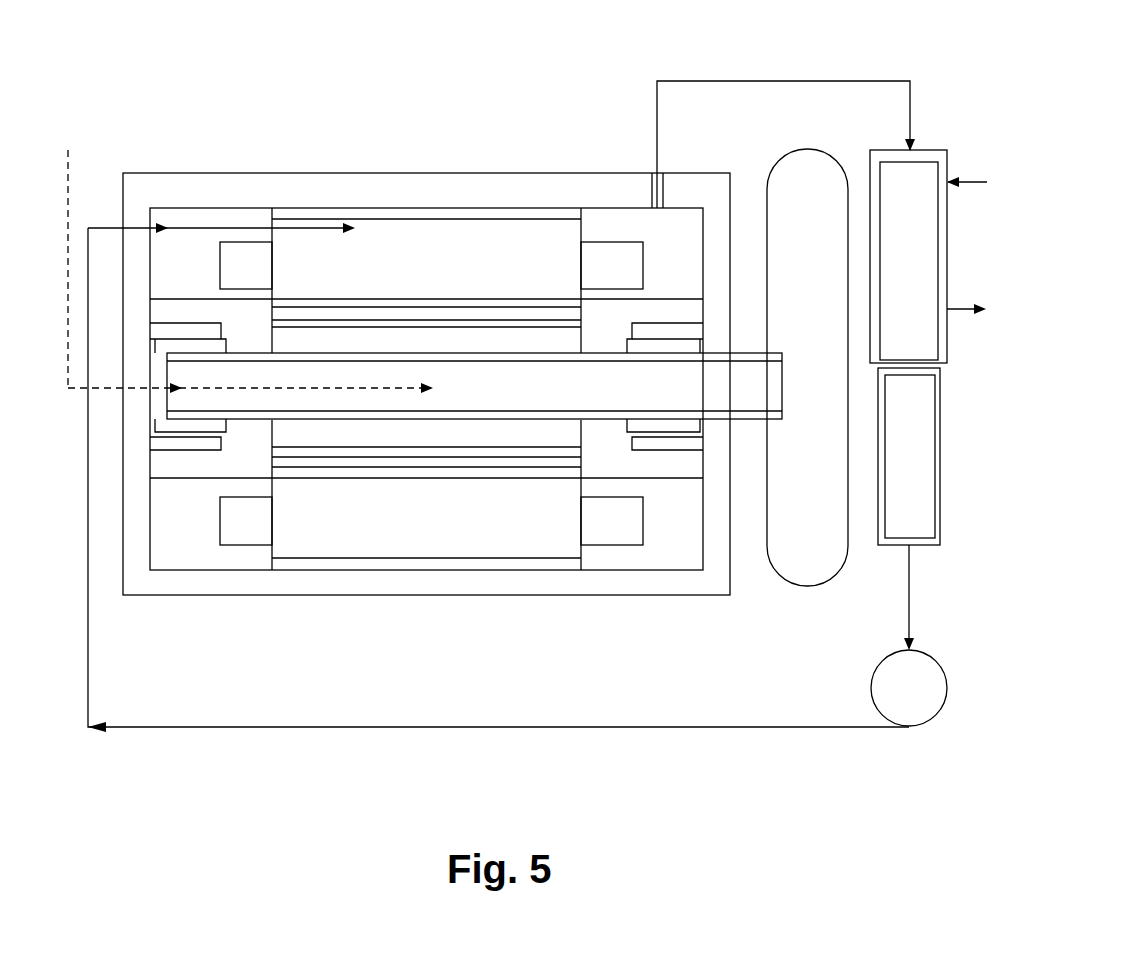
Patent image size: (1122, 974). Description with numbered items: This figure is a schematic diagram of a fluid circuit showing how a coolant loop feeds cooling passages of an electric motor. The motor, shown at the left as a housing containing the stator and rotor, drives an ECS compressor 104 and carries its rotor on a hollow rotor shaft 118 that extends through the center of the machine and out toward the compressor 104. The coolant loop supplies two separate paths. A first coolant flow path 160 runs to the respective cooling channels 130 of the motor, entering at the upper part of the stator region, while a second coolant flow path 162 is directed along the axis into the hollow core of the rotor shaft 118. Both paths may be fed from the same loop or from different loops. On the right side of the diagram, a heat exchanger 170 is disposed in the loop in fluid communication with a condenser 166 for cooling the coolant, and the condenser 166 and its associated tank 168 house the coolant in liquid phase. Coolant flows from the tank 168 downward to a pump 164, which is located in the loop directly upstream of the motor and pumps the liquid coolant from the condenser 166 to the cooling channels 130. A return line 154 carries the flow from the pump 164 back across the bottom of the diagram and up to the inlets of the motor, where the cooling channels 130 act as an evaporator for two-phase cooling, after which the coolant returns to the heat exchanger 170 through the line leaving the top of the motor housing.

The ECS compressor 104 is at (822, 379).
The rotor shaft 118 is at (747, 366).
The cooling channels 130 is at (405, 224).
The coolant return line 154 is at (574, 726).
The first coolant flow path 160 is at (106, 213).
The second coolant flow path 162 is at (110, 398).
The pump 164 is at (940, 678).
The condenser 166 is at (930, 366).
The tank 168 is at (927, 464).
The heat exchanger 170 is at (893, 148).